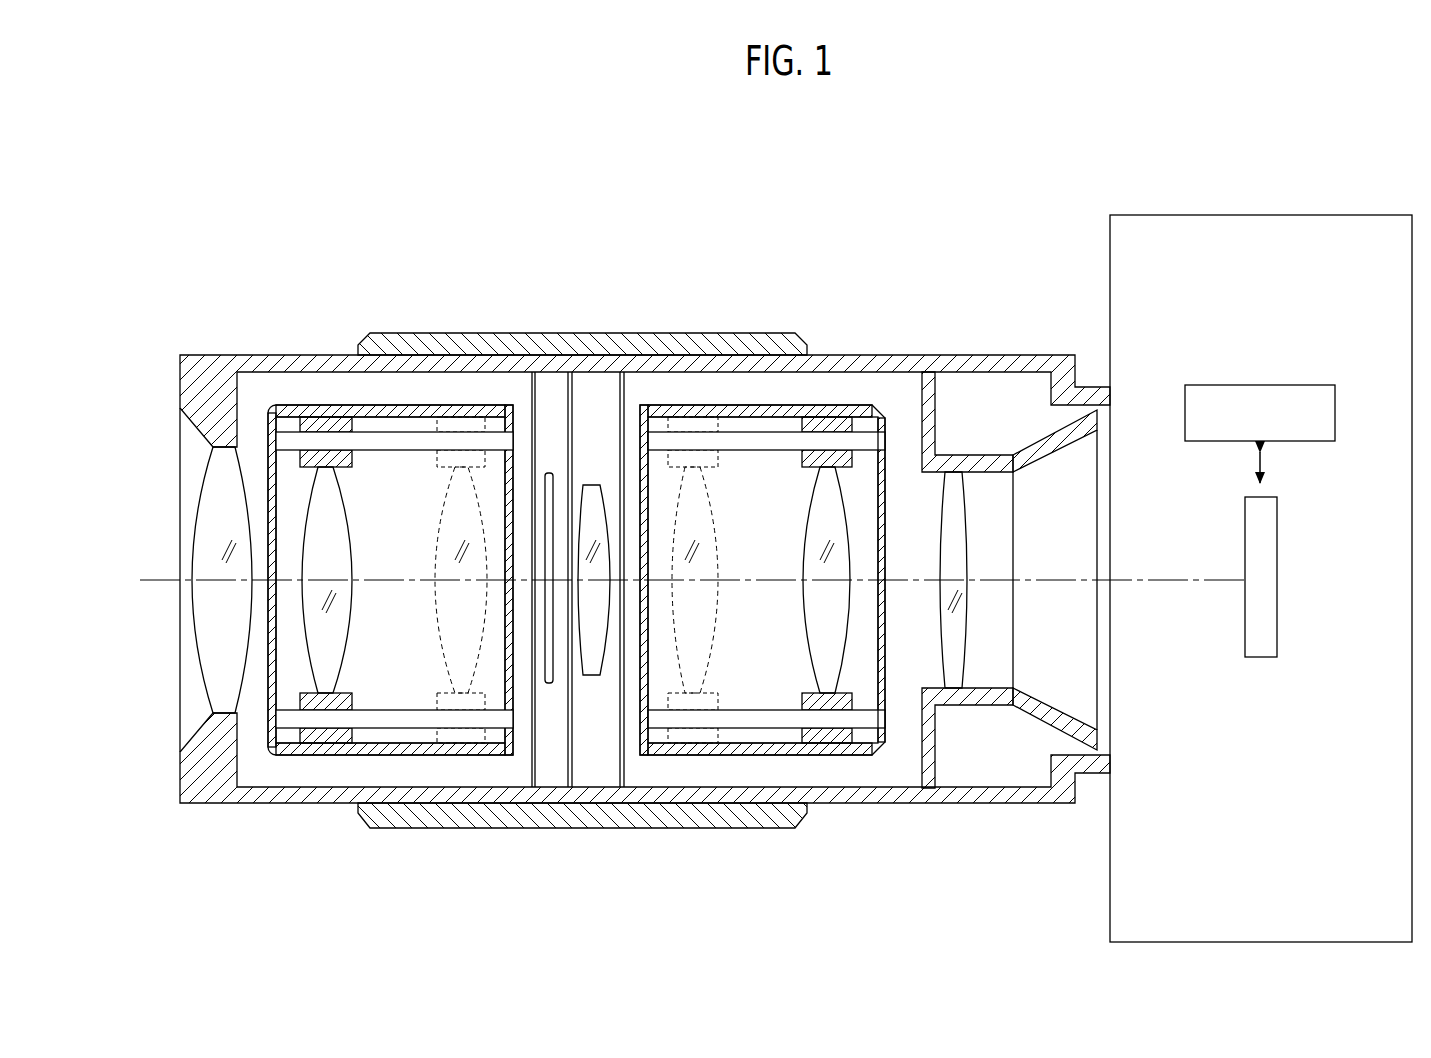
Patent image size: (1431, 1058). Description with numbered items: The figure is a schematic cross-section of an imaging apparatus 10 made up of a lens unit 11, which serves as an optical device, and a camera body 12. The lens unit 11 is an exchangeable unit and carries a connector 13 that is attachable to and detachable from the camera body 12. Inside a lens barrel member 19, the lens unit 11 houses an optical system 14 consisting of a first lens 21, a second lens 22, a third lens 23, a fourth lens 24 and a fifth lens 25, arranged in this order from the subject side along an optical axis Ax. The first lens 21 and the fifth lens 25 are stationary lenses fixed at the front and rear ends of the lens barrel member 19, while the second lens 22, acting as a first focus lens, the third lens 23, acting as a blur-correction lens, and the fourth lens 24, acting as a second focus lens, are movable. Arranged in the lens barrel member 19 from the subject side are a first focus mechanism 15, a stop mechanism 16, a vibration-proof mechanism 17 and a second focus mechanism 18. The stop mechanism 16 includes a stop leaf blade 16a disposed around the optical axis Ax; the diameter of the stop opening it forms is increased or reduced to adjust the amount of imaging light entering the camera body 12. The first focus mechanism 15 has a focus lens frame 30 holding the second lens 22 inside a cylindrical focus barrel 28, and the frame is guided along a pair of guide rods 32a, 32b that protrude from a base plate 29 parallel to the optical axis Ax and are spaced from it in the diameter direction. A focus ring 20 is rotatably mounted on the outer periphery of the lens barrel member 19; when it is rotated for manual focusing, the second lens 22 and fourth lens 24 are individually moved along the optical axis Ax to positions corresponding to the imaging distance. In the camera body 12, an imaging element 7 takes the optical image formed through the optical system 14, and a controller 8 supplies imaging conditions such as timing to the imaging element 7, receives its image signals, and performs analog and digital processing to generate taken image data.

The imaging element 7 is at (1268, 660).
The controller 8 is at (1300, 385).
The imaging apparatus 10 is at (943, 253).
The lens unit 11 is at (277, 352).
The camera body 12 is at (1262, 213).
The connector 13 is at (1080, 355).
The optical system 14 is at (188, 480).
The first focus mechanism 15 is at (421, 397).
The stop mechanism 16 is at (552, 380).
The stop leaf blade 16a is at (552, 683).
The vibration-proof mechanism 17 is at (600, 390).
The second focus mechanism 18 is at (790, 397).
The lens barrel member 19 is at (884, 372).
The focus ring 20 is at (665, 828).
The first lens 21 is at (217, 659).
The second lens 22 is at (310, 652).
The third lens 23 is at (592, 675).
The fourth lens 24 is at (832, 655).
The fifth lens 25 is at (952, 690).
The focus barrel 28 is at (376, 405).
The base plate 29 is at (497, 410).
The focus lens frame 30 is at (247, 355).
The guide rod 32a is at (370, 442).
The guide rod 32b is at (400, 715).
The optical axis Ax is at (1158, 590).